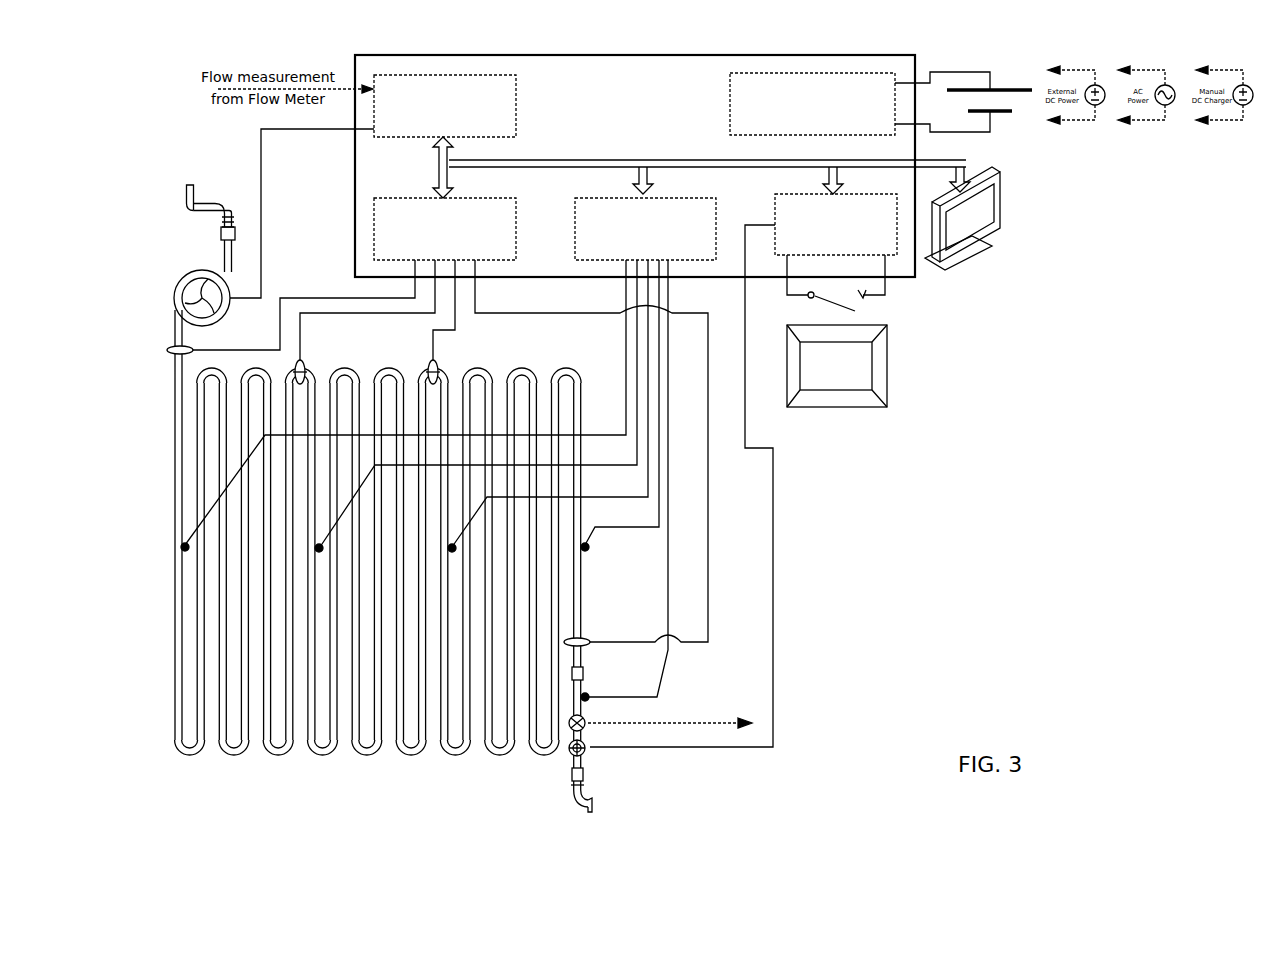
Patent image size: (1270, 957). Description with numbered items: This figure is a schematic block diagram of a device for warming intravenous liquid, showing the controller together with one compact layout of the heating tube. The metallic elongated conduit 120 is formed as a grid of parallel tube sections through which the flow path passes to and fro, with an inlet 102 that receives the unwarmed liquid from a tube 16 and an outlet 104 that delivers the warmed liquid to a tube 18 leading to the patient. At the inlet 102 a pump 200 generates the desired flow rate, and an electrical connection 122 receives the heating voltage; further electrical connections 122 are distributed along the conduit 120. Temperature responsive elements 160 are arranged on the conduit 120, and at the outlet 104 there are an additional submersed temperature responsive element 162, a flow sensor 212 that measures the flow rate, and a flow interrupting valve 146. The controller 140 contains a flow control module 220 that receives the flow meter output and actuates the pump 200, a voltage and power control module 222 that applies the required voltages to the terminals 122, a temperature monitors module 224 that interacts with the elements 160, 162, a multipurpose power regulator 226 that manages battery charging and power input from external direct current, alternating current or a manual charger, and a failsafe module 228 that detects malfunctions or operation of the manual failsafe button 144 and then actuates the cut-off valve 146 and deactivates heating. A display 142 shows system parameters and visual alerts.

The tube 16 is at (202, 192).
The tube 18 is at (594, 810).
The inlet 102 is at (233, 248).
The outlet 104 is at (572, 775).
The elongated conduit 120 is at (175, 462).
The electrical connection 122 is at (168, 351).
The controller 140 is at (920, 278).
The display 142 is at (985, 240).
The manual failsafe button 144 is at (887, 373).
The flow interrupting valve 146 is at (590, 752).
The temperature responsive element 160 is at (182, 547).
The submersed temperature responsive element 162 is at (595, 690).
The pump 200 is at (175, 280).
The flow sensor 212 is at (569, 727).
The flow control module 220 is at (517, 104).
The voltage and power control module 222 is at (517, 224).
The temperature monitors module 224 is at (717, 212).
The multipurpose power regulator 226 is at (730, 125).
The failsafe module 228 is at (853, 196).